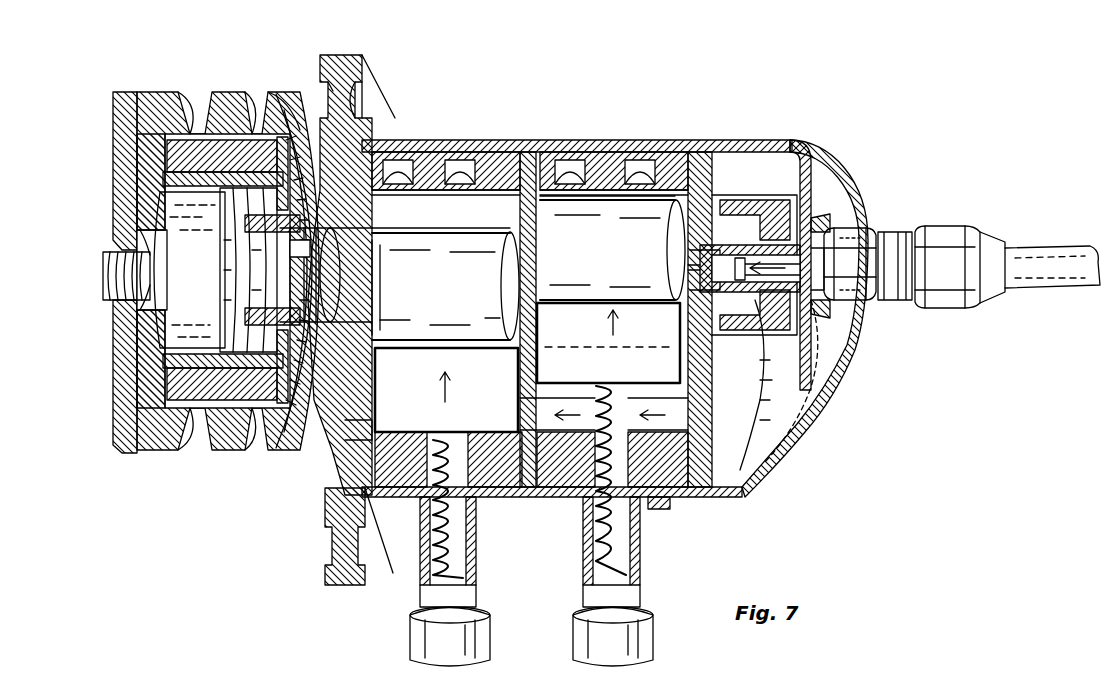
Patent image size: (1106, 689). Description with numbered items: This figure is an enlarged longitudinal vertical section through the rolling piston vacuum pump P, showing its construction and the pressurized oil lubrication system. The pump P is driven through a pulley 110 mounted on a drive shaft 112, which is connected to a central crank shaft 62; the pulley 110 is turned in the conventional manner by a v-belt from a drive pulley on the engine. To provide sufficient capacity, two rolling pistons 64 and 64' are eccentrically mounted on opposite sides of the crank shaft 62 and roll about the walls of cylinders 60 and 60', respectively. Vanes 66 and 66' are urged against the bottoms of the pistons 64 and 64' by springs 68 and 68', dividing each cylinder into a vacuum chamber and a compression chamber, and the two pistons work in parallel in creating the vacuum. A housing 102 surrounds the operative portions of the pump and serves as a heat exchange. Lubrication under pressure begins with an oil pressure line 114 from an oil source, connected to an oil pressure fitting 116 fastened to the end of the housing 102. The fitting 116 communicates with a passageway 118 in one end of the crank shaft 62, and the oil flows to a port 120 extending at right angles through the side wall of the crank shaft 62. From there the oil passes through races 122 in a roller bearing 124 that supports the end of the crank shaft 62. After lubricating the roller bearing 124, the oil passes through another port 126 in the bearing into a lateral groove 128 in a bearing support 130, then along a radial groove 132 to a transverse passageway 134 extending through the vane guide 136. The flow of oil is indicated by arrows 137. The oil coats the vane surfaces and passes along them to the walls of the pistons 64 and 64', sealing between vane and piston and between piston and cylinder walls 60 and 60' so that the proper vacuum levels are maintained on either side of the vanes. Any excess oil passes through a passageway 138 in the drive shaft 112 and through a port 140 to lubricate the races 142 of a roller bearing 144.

The pulley 110 is at (175, 92).
The roller bearing 144 is at (308, 200).
The drive shaft 112 is at (215, 303).
The port 140 is at (228, 270).
The races 142 is at (368, 420).
The vane guide 136 is at (390, 455).
The housing 102 is at (745, 146).
The pump P is at (834, 130).
The cylinder 60' is at (446, 130).
The outer cylinder 60 is at (614, 125).
The bearing support 130 is at (700, 160).
The rolling piston 64' is at (445, 286).
The rolling piston 64 is at (612, 250).
The crank shaft 62 is at (500, 240).
The passageway 138 is at (352, 290).
The vane 66' is at (446, 390).
The vane 66 is at (608, 343).
The arrows 137 is at (440, 400).
The radial groove 132 is at (672, 347).
The lateral groove 128 is at (700, 265).
The transverse passageway 134 is at (673, 425).
The spring 68' is at (479, 549).
The spring 68 is at (580, 526).
The roller bearing 124 is at (770, 215).
The races 122 is at (765, 270).
The passageway 118 is at (740, 290).
The port 126 is at (730, 292).
The port 120 is at (855, 235).
The oil pressure fitting 116 is at (885, 238).
The oil pressure line 114 is at (1040, 262).